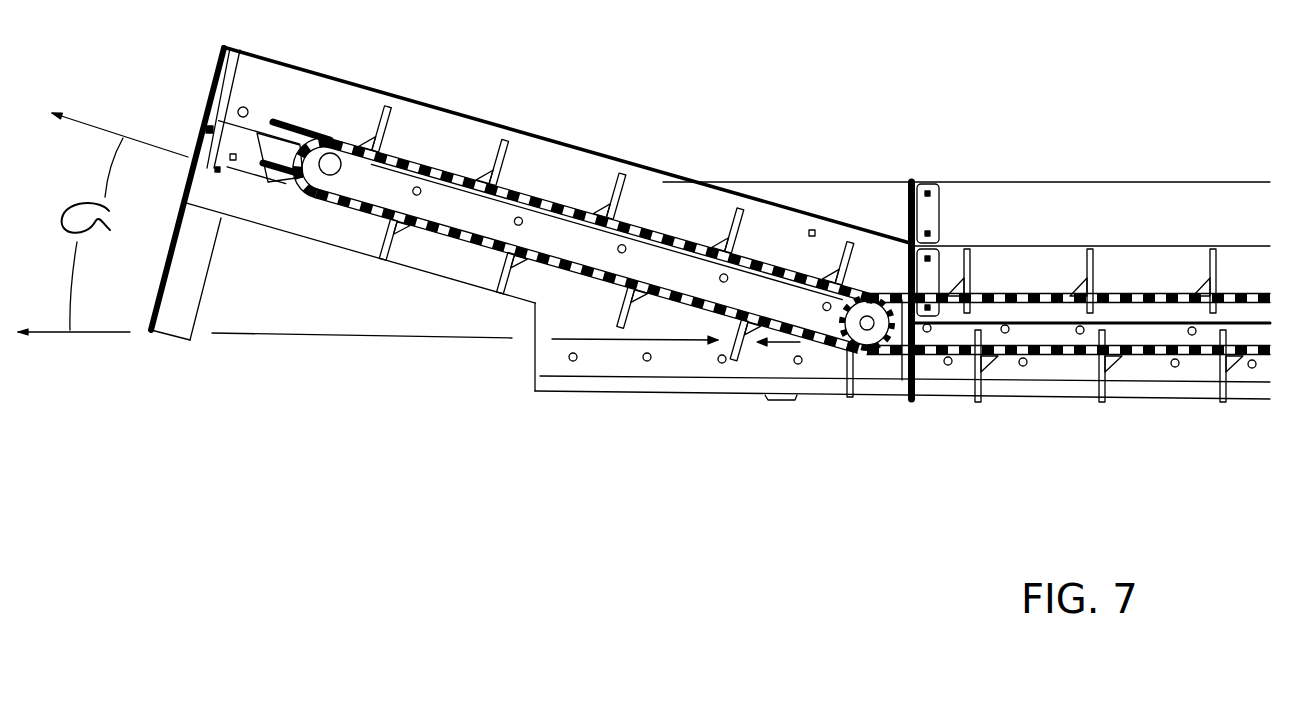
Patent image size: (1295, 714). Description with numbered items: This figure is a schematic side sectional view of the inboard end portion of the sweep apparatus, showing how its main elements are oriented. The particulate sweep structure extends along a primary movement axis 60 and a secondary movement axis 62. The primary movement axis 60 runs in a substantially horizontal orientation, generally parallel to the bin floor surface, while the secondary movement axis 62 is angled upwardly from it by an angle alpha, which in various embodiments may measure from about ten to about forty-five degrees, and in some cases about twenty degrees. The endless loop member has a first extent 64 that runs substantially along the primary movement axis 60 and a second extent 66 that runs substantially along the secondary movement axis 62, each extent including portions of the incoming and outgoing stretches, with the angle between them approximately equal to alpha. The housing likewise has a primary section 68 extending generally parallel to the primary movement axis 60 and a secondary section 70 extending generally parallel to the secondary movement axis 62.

The primary movement axis 60 is at (93, 333).
The secondary movement axis 62 is at (87, 120).
The first extent 64 is at (1047, 350).
The second extent 66 is at (435, 220).
The primary section 68 is at (1003, 205).
The secondary section 70 is at (592, 152).